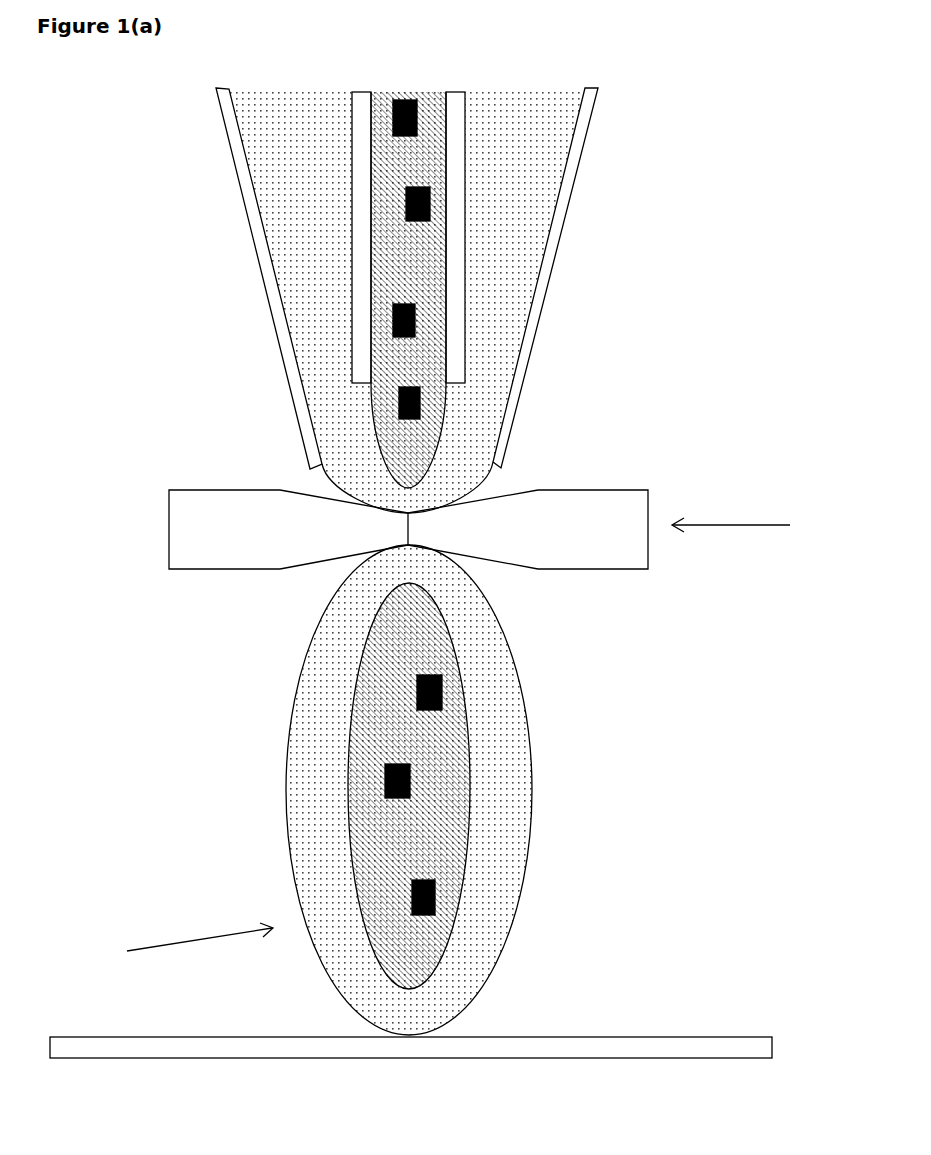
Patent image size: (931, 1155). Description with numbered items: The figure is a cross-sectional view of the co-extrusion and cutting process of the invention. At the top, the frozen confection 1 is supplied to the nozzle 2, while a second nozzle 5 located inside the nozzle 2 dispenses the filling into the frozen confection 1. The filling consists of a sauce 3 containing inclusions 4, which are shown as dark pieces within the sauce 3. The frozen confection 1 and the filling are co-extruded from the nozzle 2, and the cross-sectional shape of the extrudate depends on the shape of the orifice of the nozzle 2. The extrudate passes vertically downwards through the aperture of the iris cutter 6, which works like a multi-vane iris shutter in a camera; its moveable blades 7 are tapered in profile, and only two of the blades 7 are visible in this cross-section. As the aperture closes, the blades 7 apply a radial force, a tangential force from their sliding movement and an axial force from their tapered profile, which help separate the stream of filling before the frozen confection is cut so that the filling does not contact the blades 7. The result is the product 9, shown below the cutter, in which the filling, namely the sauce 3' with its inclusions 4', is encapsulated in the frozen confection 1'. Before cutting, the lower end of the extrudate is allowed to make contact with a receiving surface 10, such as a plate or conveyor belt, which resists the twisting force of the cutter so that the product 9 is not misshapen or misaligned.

The frozen confection 1 is at (515, 317).
The nozzle 2 is at (502, 457).
The sauce 3 is at (586, 290).
The inclusions 4 is at (251, 259).
The second nozzle 5 is at (455, 376).
The iris cutter 6 is at (745, 525).
The moveable blades 7 is at (495, 535).
The product 9 is at (181, 942).
The receiving surface 10 is at (280, 1057).
The frozen confection 1' is at (520, 790).
The sauce 3' is at (527, 786).
The inclusions 4' is at (258, 795).